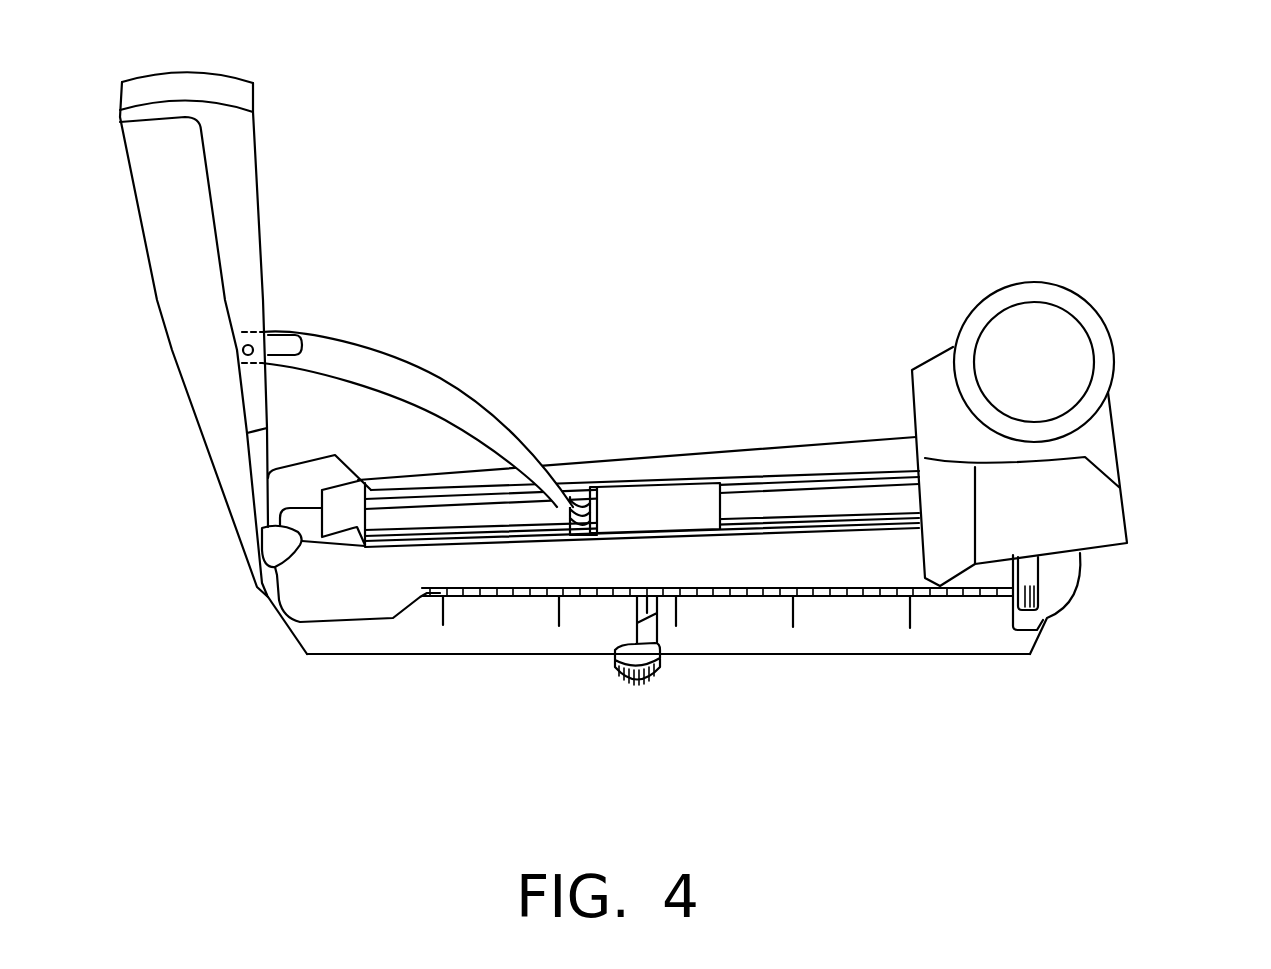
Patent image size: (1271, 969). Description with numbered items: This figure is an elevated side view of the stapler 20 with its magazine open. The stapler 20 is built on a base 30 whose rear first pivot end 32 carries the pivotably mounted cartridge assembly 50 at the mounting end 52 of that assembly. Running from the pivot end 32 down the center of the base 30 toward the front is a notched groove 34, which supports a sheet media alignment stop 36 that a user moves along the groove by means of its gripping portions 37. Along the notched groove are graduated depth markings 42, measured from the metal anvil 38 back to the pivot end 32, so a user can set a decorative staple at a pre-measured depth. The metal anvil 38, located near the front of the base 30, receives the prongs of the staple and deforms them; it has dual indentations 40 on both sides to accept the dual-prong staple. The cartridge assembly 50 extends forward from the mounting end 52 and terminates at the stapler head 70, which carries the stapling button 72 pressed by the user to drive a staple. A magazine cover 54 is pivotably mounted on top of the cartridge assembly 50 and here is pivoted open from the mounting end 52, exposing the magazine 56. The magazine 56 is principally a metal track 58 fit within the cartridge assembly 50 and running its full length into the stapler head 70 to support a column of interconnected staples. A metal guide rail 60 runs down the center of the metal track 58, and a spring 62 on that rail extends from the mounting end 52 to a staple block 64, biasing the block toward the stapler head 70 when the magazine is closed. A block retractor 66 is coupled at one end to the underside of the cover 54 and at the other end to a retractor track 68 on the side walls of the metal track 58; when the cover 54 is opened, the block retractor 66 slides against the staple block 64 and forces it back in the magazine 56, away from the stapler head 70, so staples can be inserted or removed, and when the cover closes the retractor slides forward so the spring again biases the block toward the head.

The stapler 20 is at (1063, 720).
The base 30 is at (426, 645).
The first pivot end 32 is at (360, 643).
The notched groove 34 is at (765, 592).
The sheet media alignment stop 36 is at (657, 642).
The gripping portions 37 is at (630, 680).
The metal anvil 38 is at (1035, 575).
The dual indentations 40 is at (1043, 603).
The graduated depth markings 42 is at (912, 617).
The cartridge assembly 50 is at (283, 605).
The mounting end 52 is at (330, 605).
The magazine cover 54 is at (180, 333).
The magazine 56 is at (660, 457).
The metal track 58 is at (873, 500).
The metal guide rail 60 is at (750, 518).
The spring 62 is at (407, 490).
The staple block 64 is at (610, 487).
The block retractor 66 is at (340, 347).
The retractor track 68 is at (787, 478).
The stapler head 70 is at (935, 360).
The stapling button 72 is at (1077, 293).